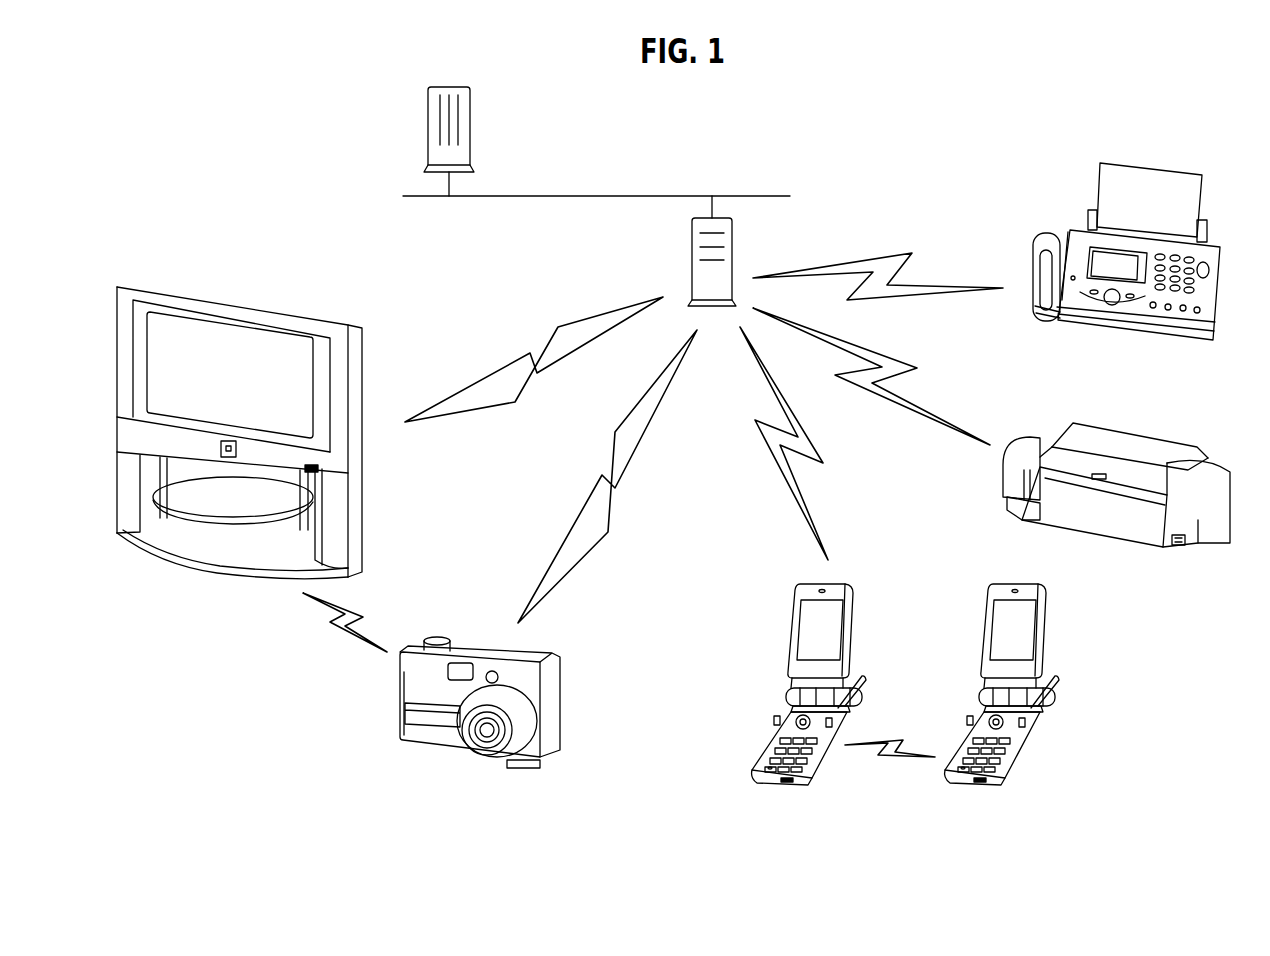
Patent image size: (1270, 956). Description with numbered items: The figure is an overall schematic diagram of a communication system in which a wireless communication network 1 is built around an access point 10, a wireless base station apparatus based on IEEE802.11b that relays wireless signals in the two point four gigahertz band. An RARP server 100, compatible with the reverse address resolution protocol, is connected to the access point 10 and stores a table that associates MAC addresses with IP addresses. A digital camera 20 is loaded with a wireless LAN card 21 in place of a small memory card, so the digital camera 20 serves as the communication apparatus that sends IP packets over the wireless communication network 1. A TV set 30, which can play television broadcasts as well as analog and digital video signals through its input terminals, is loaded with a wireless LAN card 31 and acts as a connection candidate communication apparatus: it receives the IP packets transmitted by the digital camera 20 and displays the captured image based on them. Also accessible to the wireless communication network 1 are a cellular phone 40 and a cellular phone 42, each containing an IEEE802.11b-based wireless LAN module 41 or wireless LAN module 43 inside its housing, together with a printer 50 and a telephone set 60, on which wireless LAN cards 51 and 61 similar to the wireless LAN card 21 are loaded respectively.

The wireless communication network 1 is at (843, 257).
The access point 10 is at (692, 238).
The RARP server 100 is at (470, 118).
The digital camera 20 is at (562, 697).
The wireless LAN card 21 is at (540, 765).
The TV set 30 is at (295, 313).
The wireless LAN card 31 is at (318, 470).
The cellular phone 40 is at (853, 633).
The wireless LAN module 41 is at (787, 782).
The cellular phone 42 is at (1046, 633).
The wireless LAN module 43 is at (980, 782).
The printer 50 is at (1183, 440).
The wireless LAN card 51 is at (1172, 547).
The telephone set 60 is at (1060, 232).
The wireless LAN card 61 is at (1050, 322).